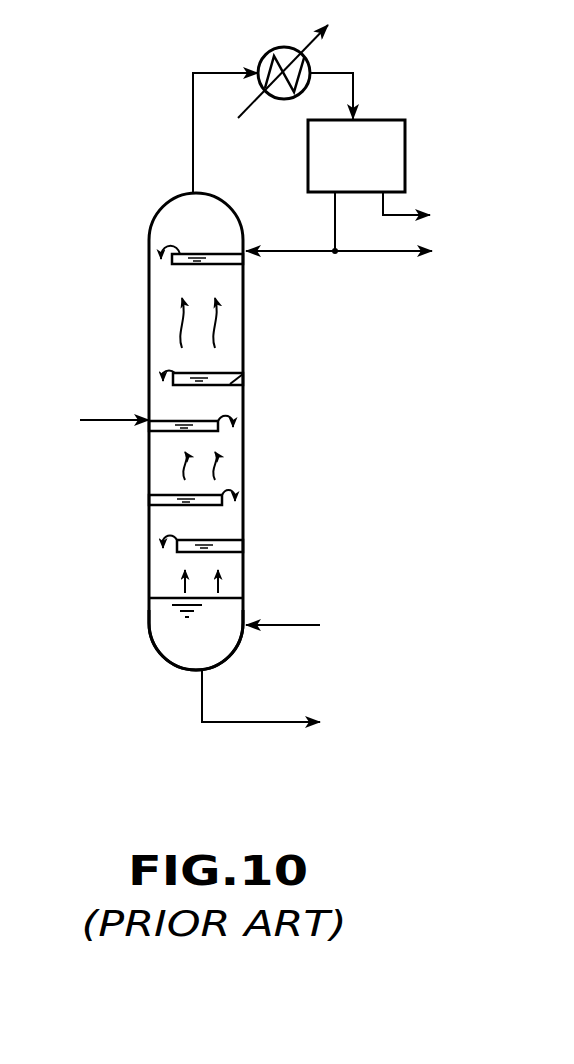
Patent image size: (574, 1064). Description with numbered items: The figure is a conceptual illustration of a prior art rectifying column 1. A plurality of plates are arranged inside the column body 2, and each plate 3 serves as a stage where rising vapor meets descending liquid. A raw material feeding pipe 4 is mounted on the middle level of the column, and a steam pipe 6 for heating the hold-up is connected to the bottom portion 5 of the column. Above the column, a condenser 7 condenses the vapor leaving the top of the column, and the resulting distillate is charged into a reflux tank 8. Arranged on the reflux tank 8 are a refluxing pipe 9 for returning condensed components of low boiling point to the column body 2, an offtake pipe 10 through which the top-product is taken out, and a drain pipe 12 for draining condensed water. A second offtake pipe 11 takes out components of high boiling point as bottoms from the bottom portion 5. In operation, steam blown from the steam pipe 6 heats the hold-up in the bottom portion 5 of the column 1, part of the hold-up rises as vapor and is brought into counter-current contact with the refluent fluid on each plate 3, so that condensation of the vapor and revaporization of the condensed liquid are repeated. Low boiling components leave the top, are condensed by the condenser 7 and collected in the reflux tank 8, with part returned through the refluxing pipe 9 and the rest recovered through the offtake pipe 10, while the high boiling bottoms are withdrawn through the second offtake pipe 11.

The rectifying column 1 is at (120, 184).
The column body 2 is at (149, 378).
The plate 3 is at (243, 375).
The raw material feeding pipe 4 is at (100, 420).
The bottom portion 5 is at (240, 650).
The steam pipe 6 is at (292, 624).
The condenser 7 is at (262, 60).
The reflux tank 8 is at (405, 137).
The refluxing pipe 9 is at (290, 254).
The offtake pipe 10 is at (378, 254).
The second offtake pipe 11 is at (240, 725).
The drain pipe 12 is at (403, 210).